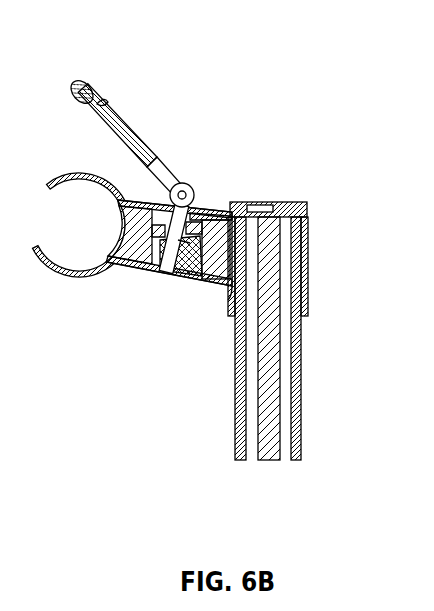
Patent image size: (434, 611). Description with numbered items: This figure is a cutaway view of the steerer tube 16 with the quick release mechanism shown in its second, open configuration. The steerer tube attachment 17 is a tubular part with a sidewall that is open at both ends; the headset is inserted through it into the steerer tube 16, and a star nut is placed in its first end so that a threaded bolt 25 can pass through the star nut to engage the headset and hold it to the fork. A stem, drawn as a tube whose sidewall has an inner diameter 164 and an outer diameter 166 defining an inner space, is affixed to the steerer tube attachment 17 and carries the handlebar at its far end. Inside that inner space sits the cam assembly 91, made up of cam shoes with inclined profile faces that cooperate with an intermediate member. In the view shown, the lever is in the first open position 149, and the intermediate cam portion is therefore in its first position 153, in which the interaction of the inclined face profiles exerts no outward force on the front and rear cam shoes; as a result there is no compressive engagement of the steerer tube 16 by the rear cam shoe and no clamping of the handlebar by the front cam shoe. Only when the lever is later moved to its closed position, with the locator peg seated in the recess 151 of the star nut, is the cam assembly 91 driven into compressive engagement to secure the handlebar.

The first open position 149 is at (106, 50).
The inner diameter 164 is at (135, 196).
The outer diameter 166 is at (122, 273).
The first position 153 is at (187, 278).
The cam assembly 91 is at (200, 213).
The steerer tube attachment 17 is at (305, 255).
The recess 151 is at (305, 212).
The steerer tube 16 is at (300, 358).
The threaded bolt 25 is at (268, 388).